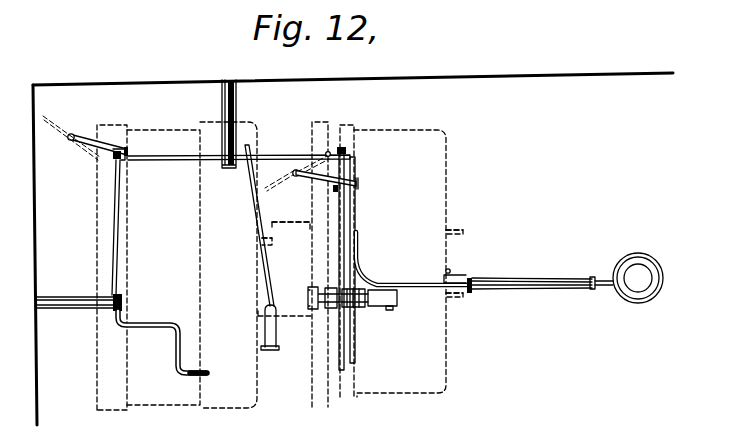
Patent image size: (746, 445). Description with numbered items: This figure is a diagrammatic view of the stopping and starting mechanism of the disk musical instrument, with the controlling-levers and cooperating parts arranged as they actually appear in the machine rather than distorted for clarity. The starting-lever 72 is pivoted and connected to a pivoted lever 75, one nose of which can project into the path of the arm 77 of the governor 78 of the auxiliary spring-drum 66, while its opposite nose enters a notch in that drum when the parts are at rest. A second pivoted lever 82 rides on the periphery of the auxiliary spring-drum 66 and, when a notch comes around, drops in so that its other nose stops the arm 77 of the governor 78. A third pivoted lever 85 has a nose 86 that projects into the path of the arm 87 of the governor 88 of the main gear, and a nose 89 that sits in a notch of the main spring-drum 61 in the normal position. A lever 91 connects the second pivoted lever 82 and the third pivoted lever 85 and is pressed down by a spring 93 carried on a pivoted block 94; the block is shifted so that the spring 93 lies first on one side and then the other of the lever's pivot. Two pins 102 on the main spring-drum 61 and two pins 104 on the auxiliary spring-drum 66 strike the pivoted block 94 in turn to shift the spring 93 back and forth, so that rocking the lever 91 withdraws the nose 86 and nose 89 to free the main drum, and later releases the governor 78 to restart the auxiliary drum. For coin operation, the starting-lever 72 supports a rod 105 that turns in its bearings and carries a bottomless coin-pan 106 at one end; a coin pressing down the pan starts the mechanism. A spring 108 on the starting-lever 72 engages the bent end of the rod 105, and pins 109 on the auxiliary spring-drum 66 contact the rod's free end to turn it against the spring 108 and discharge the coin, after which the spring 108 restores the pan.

The main spring-drum 61 is at (228, 265).
The auxiliary spring-drum 66 is at (400, 263).
The starting-lever 72 is at (503, 290).
The pivoted lever 75 is at (352, 227).
The arm of governor 77 is at (360, 184).
The governor 78 is at (297, 179).
The second pivoted lever 82 is at (357, 252).
The third pivoted lever 85 is at (149, 328).
The nose 86 is at (112, 160).
The arm of governor 87 is at (97, 143).
The governor of main gear 88 is at (60, 137).
The nose 89 is at (191, 377).
The lever 91 is at (176, 162).
The spring 93 is at (253, 216).
The pivoted block 94 is at (276, 332).
The pins 102 is at (282, 252).
The pins 104 is at (289, 223).
The rod 105 is at (549, 277).
The coin-pan 106 is at (637, 303).
The spring 108 is at (466, 277).
The pins 109 is at (462, 295).